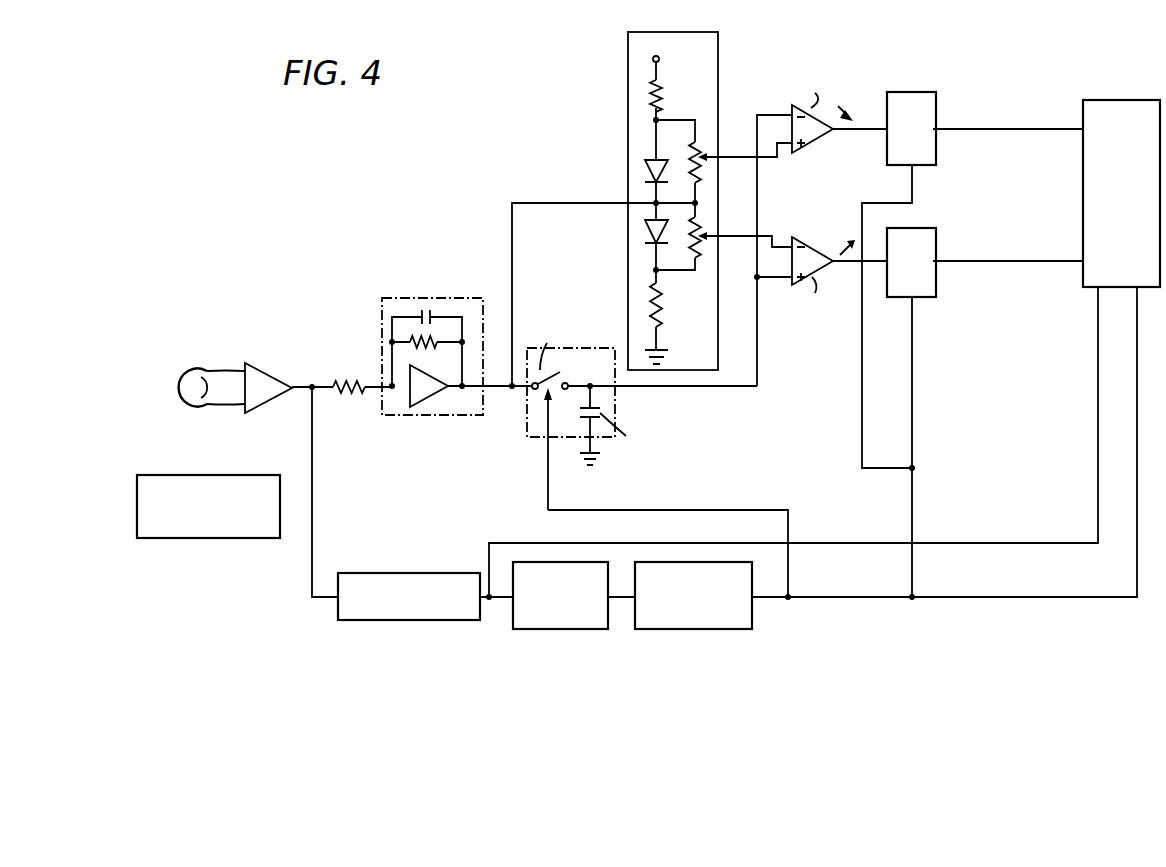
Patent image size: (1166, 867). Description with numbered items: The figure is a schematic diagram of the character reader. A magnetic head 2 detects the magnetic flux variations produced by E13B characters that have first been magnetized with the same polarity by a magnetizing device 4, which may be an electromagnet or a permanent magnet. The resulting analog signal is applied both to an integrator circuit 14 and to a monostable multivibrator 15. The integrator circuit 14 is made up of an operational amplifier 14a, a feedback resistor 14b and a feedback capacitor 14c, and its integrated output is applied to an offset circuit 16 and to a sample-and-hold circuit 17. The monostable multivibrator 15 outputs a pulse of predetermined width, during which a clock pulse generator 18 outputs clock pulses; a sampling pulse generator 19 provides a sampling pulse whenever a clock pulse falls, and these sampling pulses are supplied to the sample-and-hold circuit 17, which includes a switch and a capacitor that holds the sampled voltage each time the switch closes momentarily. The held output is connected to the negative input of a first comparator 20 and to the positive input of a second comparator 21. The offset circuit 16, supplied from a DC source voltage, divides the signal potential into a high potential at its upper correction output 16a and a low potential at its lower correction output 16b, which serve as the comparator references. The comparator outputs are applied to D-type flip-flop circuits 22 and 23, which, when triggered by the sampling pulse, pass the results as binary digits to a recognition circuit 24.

The magnetic head 2 is at (192, 369).
The magnetizing device 4 is at (232, 475).
The integrator circuit 14 is at (408, 358).
The operational amplifier 14a is at (432, 406).
The feedback resistor 14b is at (410, 347).
The feedback capacitor 14c is at (432, 312).
The monostable multivibrator 15 is at (426, 620).
The offset circuit 16 is at (642, 201).
The upper correction output 16a is at (645, 159).
The lower correction output 16b is at (645, 244).
The sample-and-hold circuit 17 is at (615, 392).
The clock pulse generator 18 is at (585, 629).
The sampling pulse generator 19 is at (720, 629).
The first comparator 20 is at (816, 142).
The second comparator 21 is at (809, 247).
The D-type flip-flop circuit 22 is at (910, 92).
The D-type flip-flop circuit 23 is at (938, 298).
The recognition circuit 24 is at (1120, 100).